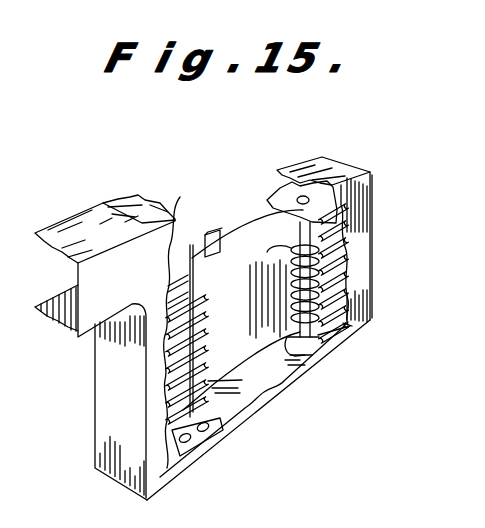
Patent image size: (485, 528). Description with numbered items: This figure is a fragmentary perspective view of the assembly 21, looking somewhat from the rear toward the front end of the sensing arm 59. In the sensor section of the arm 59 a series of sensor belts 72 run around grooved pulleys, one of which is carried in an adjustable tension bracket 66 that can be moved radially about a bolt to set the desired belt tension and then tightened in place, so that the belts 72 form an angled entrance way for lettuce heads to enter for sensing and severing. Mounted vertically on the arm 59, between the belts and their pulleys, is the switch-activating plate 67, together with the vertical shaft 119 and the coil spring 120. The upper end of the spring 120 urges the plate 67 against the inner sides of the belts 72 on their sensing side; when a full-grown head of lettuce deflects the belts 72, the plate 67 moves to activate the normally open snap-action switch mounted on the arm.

The assembly 21 is at (315, 377).
The arm 59 is at (347, 167).
The tension bracket 66 is at (198, 430).
The switch actuator plate 67 is at (250, 222).
The sensor belts 72 is at (180, 198).
The vertical shaft 119 is at (310, 237).
The coil spring 120 is at (265, 248).